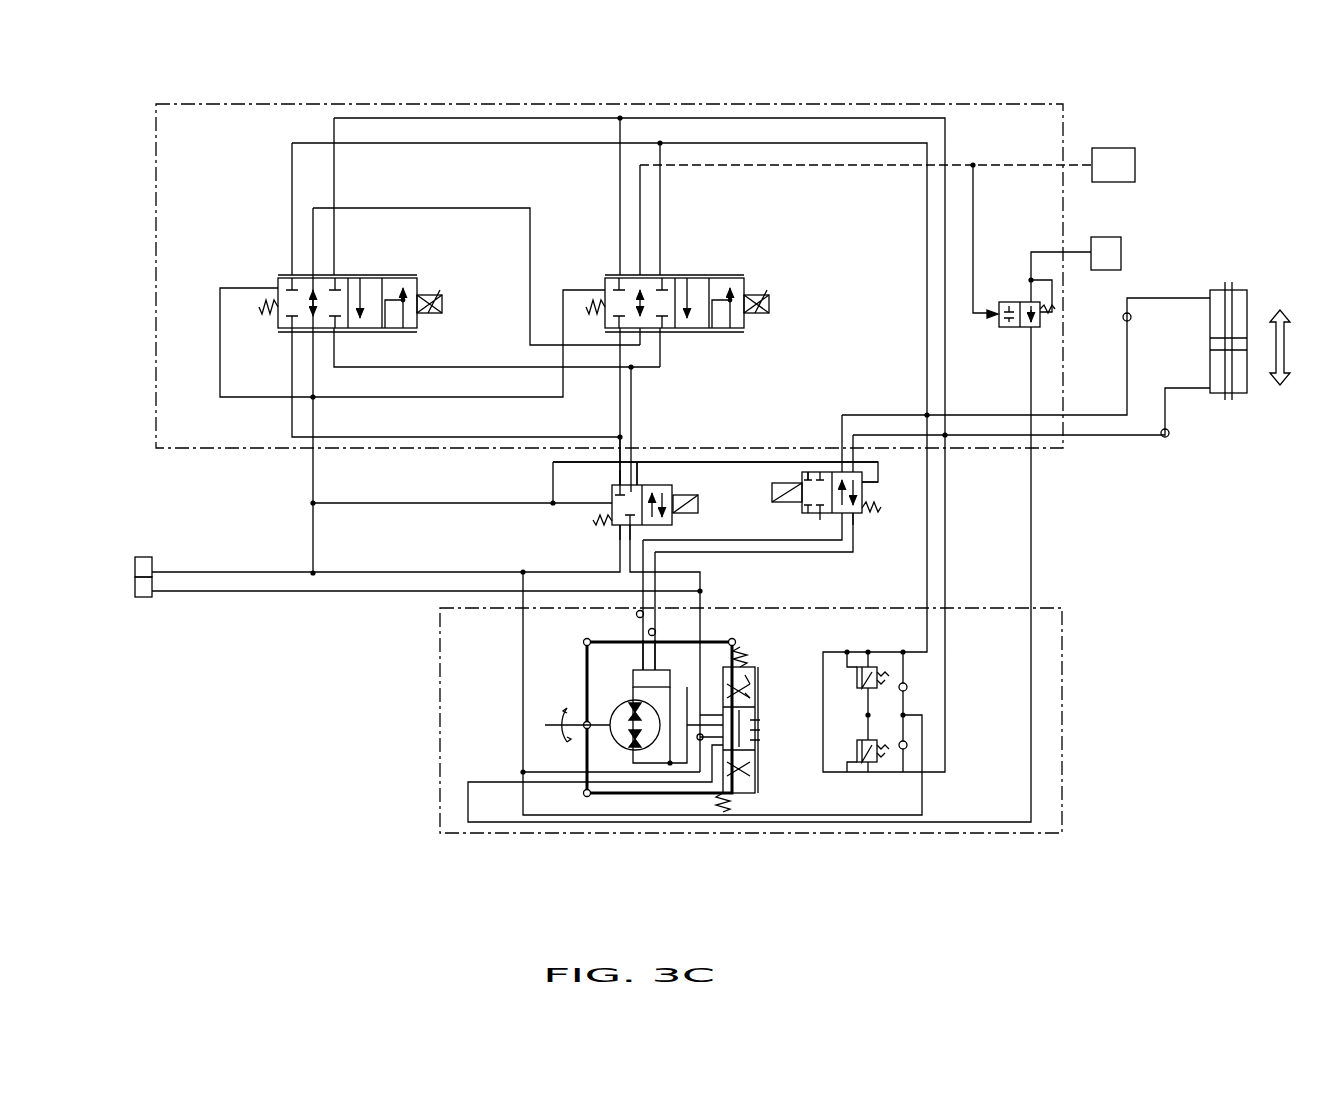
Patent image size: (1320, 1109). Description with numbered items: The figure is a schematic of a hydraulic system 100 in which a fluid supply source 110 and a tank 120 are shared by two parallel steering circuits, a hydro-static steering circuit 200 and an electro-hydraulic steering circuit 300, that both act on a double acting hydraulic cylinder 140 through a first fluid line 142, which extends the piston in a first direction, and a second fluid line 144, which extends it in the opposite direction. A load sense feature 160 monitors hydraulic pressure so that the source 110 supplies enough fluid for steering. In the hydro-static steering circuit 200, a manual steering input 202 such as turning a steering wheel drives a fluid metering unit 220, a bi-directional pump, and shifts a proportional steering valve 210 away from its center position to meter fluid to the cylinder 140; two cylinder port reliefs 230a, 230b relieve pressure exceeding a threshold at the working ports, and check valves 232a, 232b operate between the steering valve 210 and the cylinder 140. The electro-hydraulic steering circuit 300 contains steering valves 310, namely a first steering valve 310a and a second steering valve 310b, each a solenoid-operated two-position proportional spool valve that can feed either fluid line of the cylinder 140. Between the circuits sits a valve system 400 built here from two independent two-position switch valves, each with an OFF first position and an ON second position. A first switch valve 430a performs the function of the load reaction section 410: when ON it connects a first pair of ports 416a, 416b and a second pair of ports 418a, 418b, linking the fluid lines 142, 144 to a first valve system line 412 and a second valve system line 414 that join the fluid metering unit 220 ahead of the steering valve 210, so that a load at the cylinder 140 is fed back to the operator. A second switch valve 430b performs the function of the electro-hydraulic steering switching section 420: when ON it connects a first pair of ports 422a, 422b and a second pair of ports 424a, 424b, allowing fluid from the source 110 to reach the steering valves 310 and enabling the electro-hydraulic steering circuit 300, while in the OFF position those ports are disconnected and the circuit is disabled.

The hydraulic system 100 is at (1189, 90).
The fluid supply source 110 is at (147, 600).
The tank 120 is at (153, 557).
The hydraulic cylinder 140 is at (1213, 290).
The first fluid line 142 is at (1131, 319).
The second fluid line 144 is at (1169, 434).
The load sense feature 160 is at (1100, 236).
The hydro-static steering circuit 200 is at (1062, 633).
The manual steering input 202 is at (567, 713).
The steering valve 210 is at (775, 659).
The fluid metering unit 220 is at (612, 710).
The first cylinder port relief 230a is at (890, 672).
The second cylinder port relief 230b is at (860, 770).
The first check valve 232a is at (907, 687).
The second check valve 232b is at (907, 745).
The electro-hydraulic steering circuit 300 is at (1063, 121).
The steering valve 310 is at (495, 294).
The first steering valve 310a is at (277, 273).
The second steering valve 310b is at (713, 273).
The valve system 400 is at (495, 557).
The load reaction section 410 is at (833, 534).
The first valve system line 412 is at (640, 617).
The second valve system line 414 is at (655, 636).
The first port of first pair of ports 416a is at (863, 477).
The second port of first pair of ports 416b is at (857, 515).
The first port of second pair of ports 418a is at (810, 472).
The second port of second pair of ports 418b is at (840, 518).
The electro-hydraulic steering switching section 420 is at (645, 461).
The first port of first pair of ports 422a is at (637, 481).
The second port of first pair of ports 422b is at (630, 532).
The first port of second pair of ports 424a is at (611, 487).
The second port of second pair of ports 424b is at (621, 506).
The first switch valve 430a is at (801, 472).
The second switch valve 430b is at (618, 483).